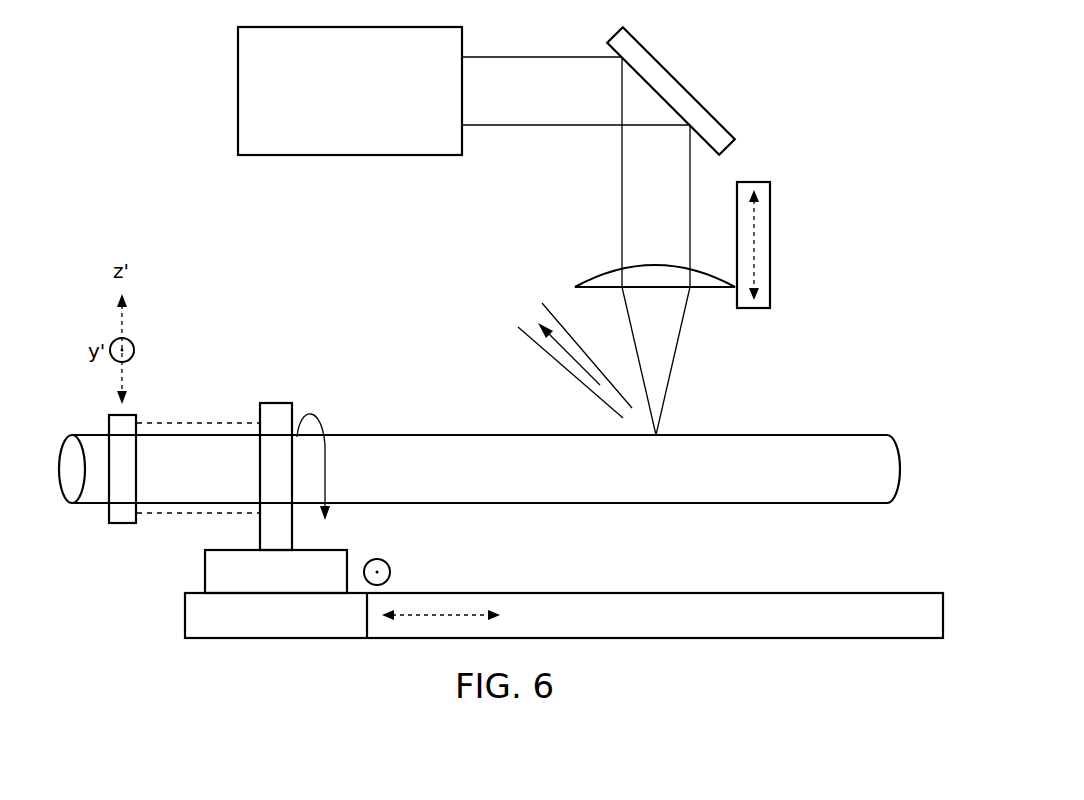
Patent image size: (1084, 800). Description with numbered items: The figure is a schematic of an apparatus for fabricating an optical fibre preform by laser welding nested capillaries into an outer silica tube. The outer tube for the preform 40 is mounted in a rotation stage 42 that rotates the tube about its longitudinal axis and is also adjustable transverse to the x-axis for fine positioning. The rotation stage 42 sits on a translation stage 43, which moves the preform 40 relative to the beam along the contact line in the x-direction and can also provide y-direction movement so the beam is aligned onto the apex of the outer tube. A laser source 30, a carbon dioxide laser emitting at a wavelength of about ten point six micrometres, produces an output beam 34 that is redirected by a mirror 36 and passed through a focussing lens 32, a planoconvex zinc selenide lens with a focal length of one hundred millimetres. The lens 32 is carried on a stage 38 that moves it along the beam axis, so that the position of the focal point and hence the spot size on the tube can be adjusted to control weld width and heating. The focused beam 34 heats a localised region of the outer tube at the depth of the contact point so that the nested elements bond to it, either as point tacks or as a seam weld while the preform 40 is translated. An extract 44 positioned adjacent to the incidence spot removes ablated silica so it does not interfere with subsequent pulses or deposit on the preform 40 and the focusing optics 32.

The laser source 30 is at (238, 88).
The focussing lens 32 is at (705, 290).
The output beam 34 is at (620, 187).
The mirror 36 is at (690, 88).
The stage 38 is at (772, 195).
The preform 40 is at (861, 435).
The rotation stage 42 is at (275, 403).
The translation stage 43 is at (185, 618).
The extract 44 is at (532, 338).